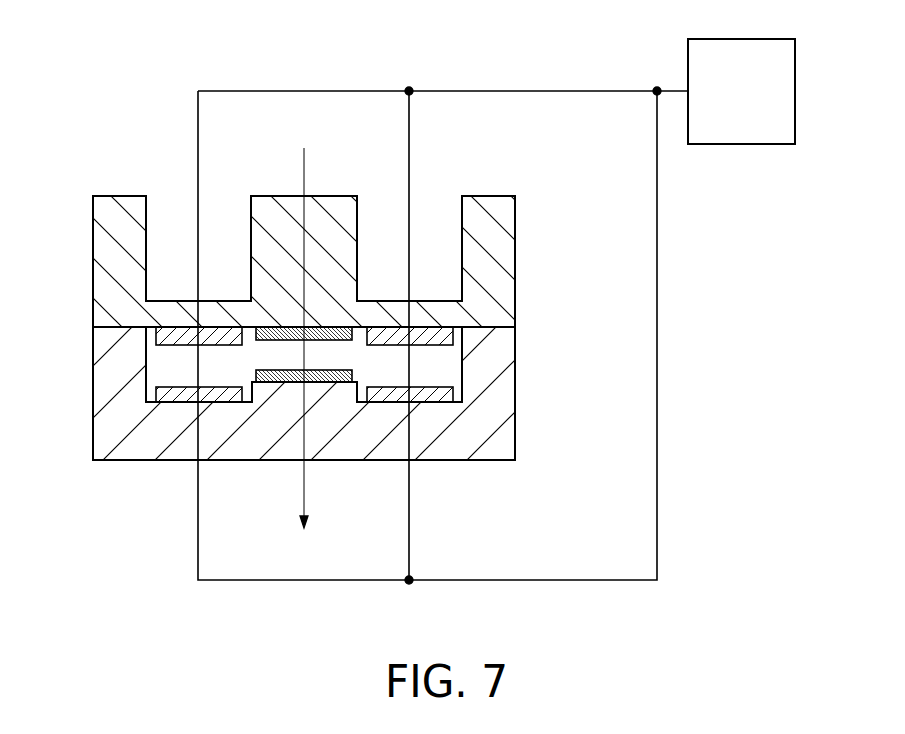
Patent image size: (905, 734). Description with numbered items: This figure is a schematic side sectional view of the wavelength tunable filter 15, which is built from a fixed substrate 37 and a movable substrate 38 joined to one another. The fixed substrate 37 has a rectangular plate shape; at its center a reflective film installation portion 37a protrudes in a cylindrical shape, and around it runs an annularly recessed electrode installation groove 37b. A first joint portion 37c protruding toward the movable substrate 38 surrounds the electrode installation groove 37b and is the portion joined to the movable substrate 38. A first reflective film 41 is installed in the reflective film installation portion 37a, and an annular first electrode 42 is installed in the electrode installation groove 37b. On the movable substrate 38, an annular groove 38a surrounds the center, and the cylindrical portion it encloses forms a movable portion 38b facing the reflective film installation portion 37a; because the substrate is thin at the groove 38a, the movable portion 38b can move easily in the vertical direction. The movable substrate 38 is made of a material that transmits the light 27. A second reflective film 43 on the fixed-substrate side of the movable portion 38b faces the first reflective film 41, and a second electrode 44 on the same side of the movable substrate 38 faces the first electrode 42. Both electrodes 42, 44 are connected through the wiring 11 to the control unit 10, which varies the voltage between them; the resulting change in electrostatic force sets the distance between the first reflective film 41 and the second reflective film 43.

The control unit 10 is at (786, 88).
The wiring 11 is at (537, 88).
The wavelength tunable filter 15 is at (80, 78).
The light 27 is at (302, 160).
The fixed substrate 37 is at (512, 434).
The reflective film installation portion 37a is at (340, 462).
The electrode installation groove 37b is at (256, 462).
The first joint portion 37c is at (513, 335).
The movable substrate 38 is at (512, 236).
The groove 38a is at (384, 300).
The movable portion 38b is at (350, 196).
The first reflective film 41 is at (294, 371).
The first electrode 42 is at (430, 385).
The second reflective film 43 is at (317, 342).
The second electrode 44 is at (425, 346).